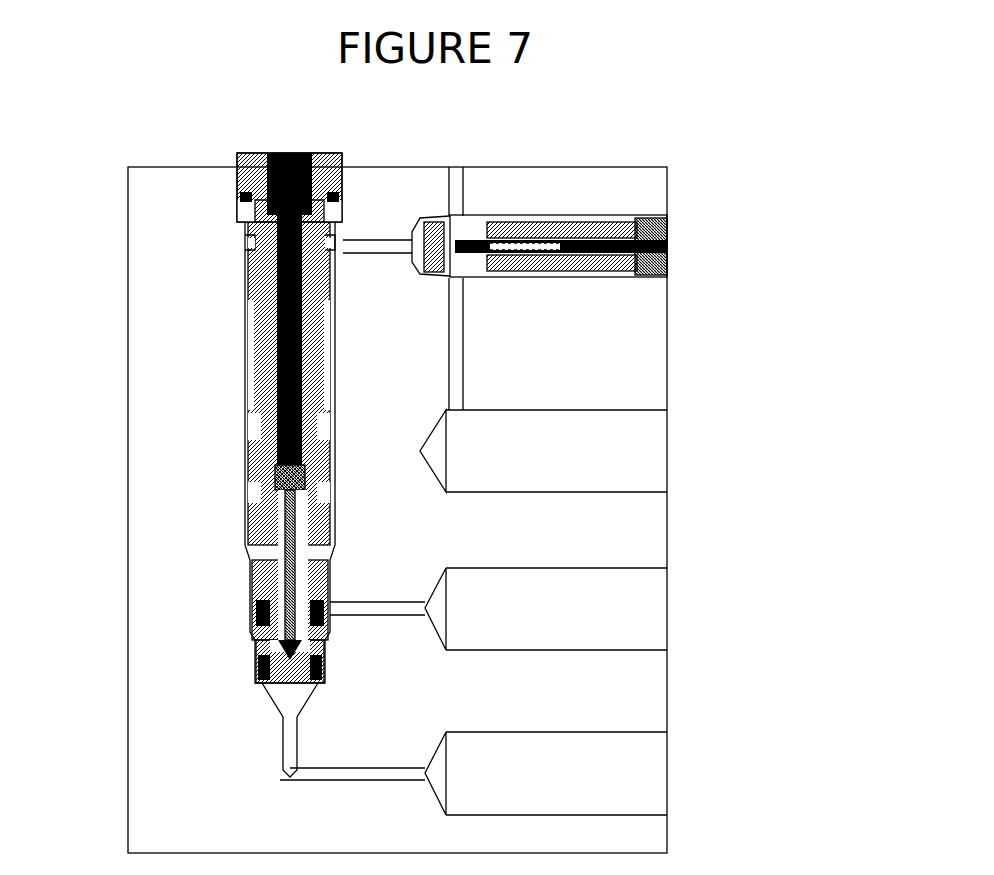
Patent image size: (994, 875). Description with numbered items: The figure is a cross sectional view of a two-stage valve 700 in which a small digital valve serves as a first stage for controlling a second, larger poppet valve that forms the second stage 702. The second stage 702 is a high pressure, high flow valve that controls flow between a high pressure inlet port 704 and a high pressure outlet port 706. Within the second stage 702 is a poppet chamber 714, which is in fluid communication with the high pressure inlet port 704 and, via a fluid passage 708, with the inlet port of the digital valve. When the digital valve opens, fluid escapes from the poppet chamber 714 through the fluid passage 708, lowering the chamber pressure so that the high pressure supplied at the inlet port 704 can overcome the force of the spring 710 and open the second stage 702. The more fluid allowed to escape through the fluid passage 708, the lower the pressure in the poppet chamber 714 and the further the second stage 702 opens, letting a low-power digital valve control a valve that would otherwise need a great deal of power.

The two-stage valve 700 is at (416, 131).
The second stage 702 is at (248, 158).
The high pressure inlet port 704 is at (647, 760).
The high pressure outlet port 706 is at (642, 617).
The fluid passage 708 is at (381, 245).
The spring 710 is at (243, 376).
The poppet chamber 714 is at (243, 245).